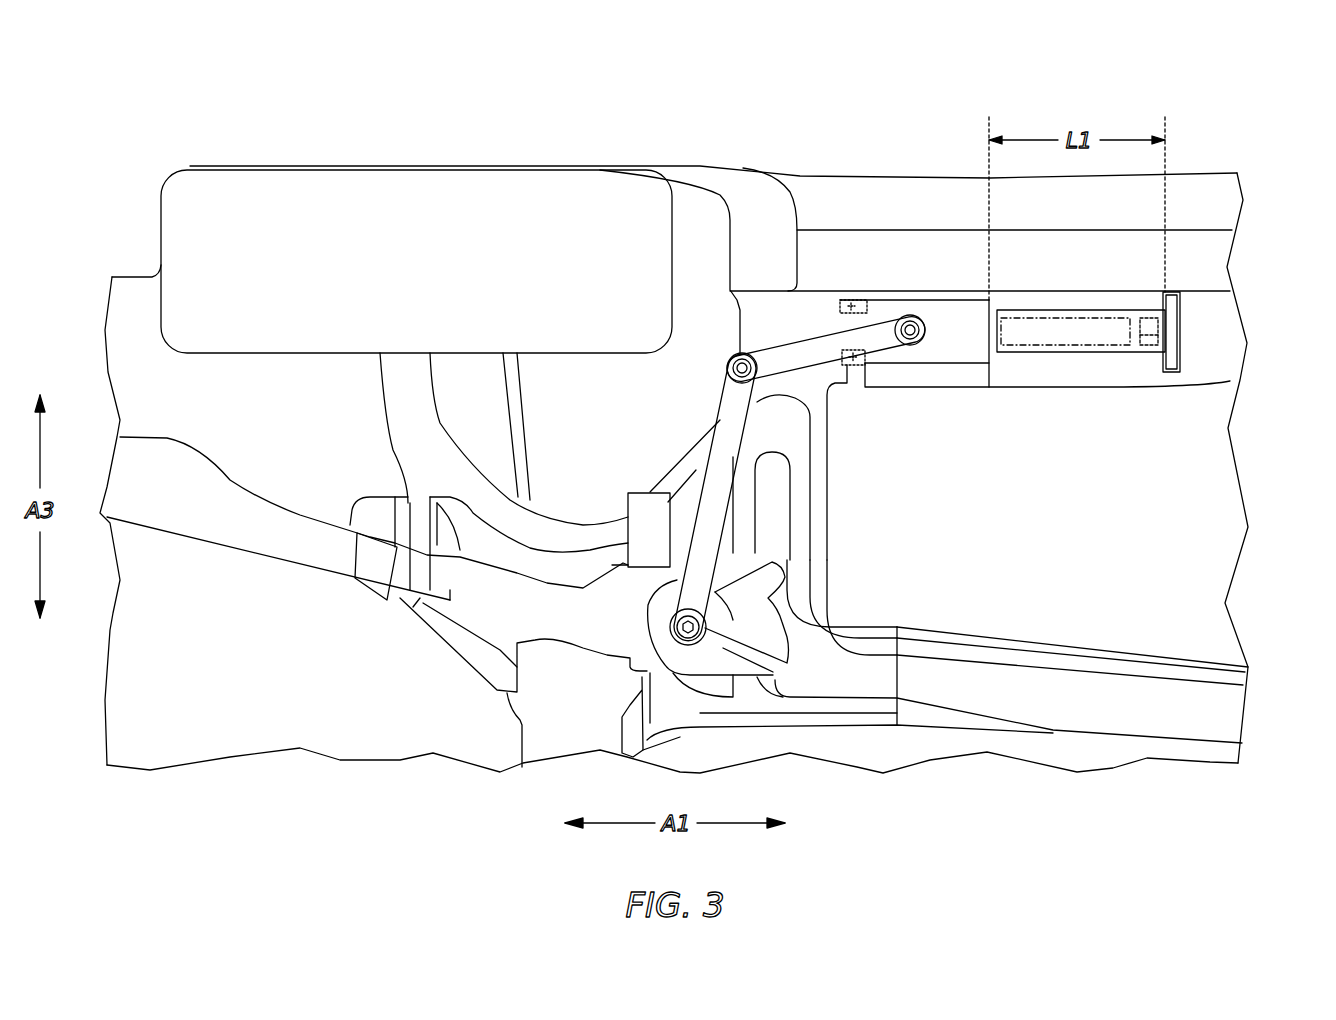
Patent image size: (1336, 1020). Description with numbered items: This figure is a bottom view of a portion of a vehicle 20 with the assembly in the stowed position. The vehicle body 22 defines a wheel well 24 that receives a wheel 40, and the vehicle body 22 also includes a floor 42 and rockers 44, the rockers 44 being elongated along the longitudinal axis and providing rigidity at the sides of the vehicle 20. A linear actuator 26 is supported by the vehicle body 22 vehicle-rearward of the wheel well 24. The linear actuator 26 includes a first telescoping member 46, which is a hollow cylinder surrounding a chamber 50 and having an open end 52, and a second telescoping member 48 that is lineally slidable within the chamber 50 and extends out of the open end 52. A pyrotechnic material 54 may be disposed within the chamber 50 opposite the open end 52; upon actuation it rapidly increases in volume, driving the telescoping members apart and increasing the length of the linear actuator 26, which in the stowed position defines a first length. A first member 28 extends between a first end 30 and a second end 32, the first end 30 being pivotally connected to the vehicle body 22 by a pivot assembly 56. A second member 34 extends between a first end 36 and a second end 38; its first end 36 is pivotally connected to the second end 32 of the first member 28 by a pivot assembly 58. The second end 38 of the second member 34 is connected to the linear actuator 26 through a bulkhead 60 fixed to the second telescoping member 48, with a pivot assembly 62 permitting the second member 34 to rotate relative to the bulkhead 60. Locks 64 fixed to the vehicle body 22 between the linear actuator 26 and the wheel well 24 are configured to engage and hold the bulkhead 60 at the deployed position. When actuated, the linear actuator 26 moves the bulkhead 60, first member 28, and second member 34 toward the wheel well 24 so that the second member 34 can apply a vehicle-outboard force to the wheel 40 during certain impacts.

The vehicle 20 is at (840, 96).
The vehicle body 22 is at (1190, 170).
The wheel well 24 is at (691, 210).
The linear actuator 26 is at (1037, 392).
The first member 28 is at (723, 472).
The first end 30 is at (738, 632).
The second end 32 is at (727, 367).
The second member 34 is at (778, 366).
The first end 36 is at (745, 354).
The second end 38 is at (905, 313).
The wheel 40 is at (328, 187).
The floor 42 is at (1213, 503).
The rocker 44 is at (1215, 326).
The first telescoping member 46 is at (1130, 360).
The second telescoping member 48 is at (1082, 340).
The chamber 50 is at (1140, 322).
The open end 52 is at (1000, 330).
The pyrotechnic material 54 is at (1148, 335).
The pivot assembly 56 is at (672, 625).
The pivot assembly 58 is at (727, 358).
The bulkhead 60 is at (950, 317).
The pivot assembly 62 is at (908, 345).
The lock 64 is at (855, 299).